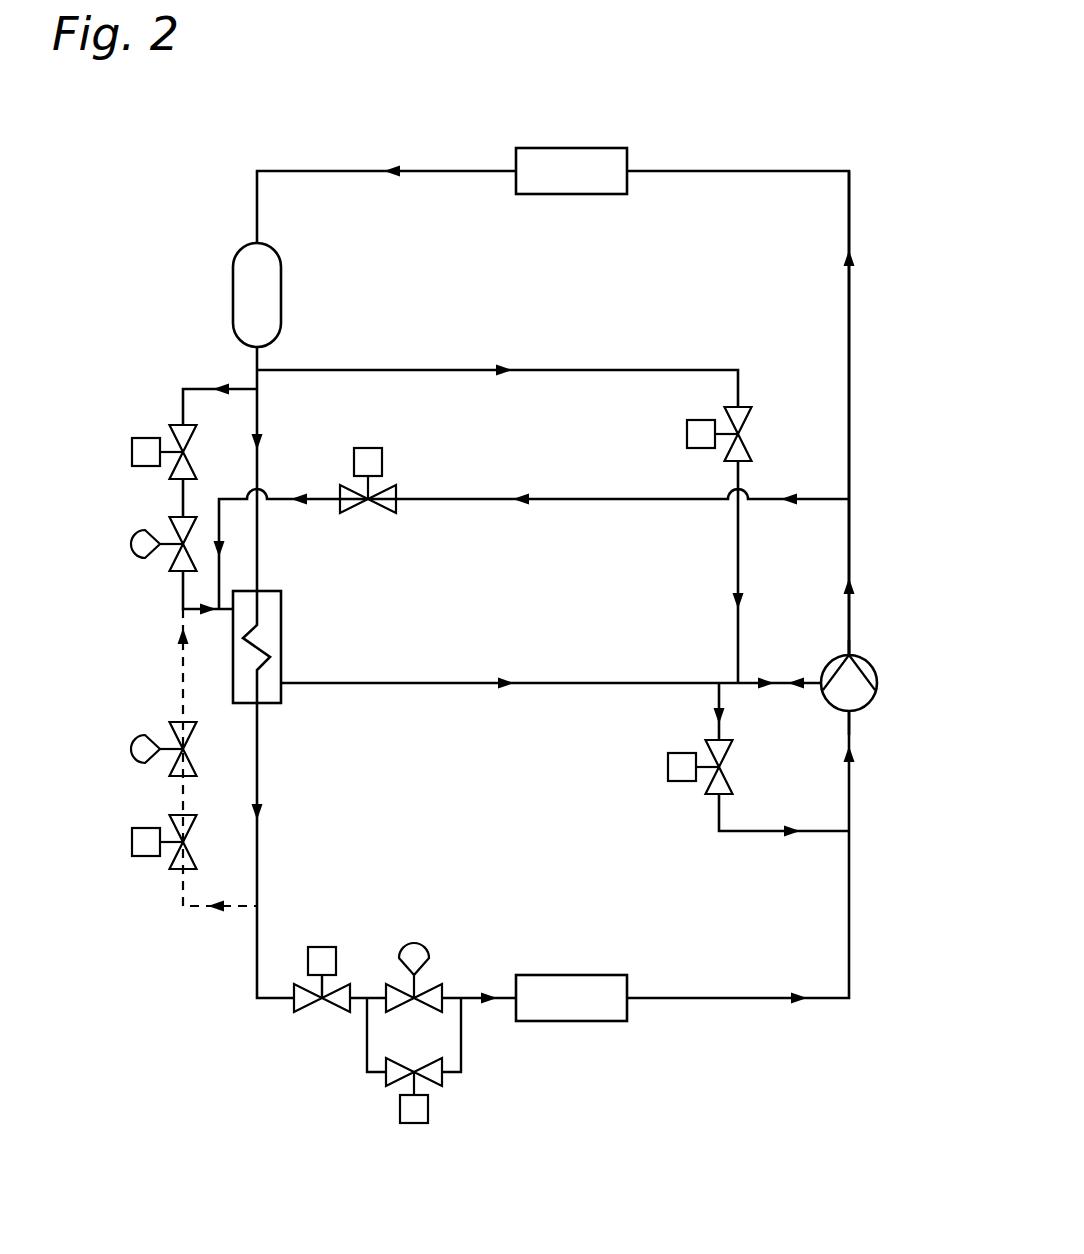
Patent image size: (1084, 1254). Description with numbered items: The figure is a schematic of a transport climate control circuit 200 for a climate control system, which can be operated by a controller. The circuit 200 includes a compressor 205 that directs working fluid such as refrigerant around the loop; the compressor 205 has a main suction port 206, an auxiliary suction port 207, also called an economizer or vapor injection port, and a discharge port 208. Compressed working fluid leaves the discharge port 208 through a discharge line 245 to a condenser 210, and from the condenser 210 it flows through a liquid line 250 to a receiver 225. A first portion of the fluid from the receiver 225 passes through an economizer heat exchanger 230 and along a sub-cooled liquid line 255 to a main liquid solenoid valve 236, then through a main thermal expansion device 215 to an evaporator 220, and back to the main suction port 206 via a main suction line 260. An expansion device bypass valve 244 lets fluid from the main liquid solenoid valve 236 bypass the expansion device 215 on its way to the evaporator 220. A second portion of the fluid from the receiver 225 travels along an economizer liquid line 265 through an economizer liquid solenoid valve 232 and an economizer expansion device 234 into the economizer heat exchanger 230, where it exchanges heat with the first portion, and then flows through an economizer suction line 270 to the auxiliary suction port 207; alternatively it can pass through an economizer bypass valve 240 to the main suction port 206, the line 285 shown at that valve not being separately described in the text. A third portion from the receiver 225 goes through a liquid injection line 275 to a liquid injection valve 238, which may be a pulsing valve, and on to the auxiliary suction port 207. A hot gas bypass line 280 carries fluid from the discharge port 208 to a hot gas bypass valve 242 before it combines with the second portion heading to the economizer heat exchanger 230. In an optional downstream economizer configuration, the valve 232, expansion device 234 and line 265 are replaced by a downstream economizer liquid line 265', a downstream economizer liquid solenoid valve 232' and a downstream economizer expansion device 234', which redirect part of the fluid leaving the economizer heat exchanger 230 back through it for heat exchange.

The transport climate control circuit 200 is at (803, 92).
The compressor 205 is at (876, 668).
The main suction port 206 is at (857, 713).
The auxiliary suction port 207 is at (822, 681).
The discharge port 208 is at (852, 651).
The condenser 210 is at (613, 148).
The main thermal expansion device 215 is at (412, 946).
The evaporator 220 is at (587, 1023).
The receiver 225 is at (245, 248).
The economizer heat exchanger 230 is at (282, 613).
The economizer liquid solenoid valve 232 is at (122, 449).
The downstream economizer liquid solenoid valve 232' is at (120, 840).
The economizer expansion device 234 is at (122, 541).
The downstream economizer expansion device 234' is at (120, 747).
The main liquid solenoid valve 236 is at (322, 945).
The liquid injection valve 238 is at (688, 428).
The economizer bypass valve 240 is at (667, 768).
The hot gas bypass valve 242 is at (378, 446).
The expansion device bypass valve 244 is at (415, 1123).
The discharge line 245 is at (851, 322).
The liquid line 250 is at (329, 166).
The sub-cooled liquid line 255 is at (258, 753).
The main suction line 260 is at (828, 1000).
The economizer liquid line 265 is at (187, 480).
The downstream economizer liquid line 265' is at (183, 779).
The economizer suction line 270 is at (573, 667).
The liquid injection line 275 is at (375, 362).
The hot gas bypass line 280 is at (452, 498).
The bypass line 285 is at (715, 697).